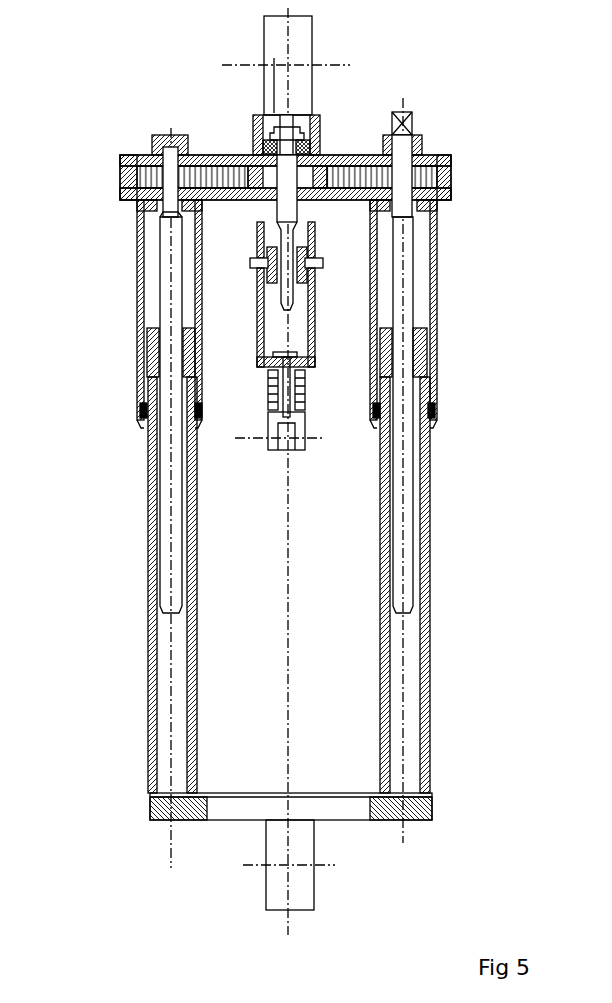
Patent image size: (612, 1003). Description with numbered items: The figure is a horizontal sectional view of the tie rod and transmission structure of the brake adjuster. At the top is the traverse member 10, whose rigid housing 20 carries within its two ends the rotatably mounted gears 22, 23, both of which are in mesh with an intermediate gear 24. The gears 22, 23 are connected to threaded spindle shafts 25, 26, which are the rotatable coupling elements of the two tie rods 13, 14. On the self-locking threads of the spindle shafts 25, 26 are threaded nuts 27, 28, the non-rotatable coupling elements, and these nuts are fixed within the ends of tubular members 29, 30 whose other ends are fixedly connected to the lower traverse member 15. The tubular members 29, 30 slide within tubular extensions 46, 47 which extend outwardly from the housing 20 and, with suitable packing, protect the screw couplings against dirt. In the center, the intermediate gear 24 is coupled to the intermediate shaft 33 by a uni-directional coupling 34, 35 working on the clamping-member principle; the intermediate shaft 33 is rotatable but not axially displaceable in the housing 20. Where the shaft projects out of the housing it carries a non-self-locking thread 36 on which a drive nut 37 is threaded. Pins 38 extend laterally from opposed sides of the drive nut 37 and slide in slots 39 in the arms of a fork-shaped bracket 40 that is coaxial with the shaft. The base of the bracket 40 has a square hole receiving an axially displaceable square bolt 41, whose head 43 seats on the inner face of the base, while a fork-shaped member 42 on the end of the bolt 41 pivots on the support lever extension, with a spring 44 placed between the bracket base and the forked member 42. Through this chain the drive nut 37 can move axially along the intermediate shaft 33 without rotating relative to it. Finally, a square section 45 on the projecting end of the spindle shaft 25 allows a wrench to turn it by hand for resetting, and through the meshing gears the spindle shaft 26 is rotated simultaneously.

The traverse member 10 is at (292, 474).
The tie rod 13 is at (349, 464).
The tie rod 14 is at (114, 470).
The traverse member 15 is at (232, 821).
The housing 20 is at (322, 158).
The gear 22 is at (440, 179).
The gear 23 is at (150, 175).
The intermediate gear 24 is at (226, 155).
The threaded spindle shaft 25 is at (438, 276).
The threaded spindle shaft 26 is at (167, 474).
The nut 27 is at (437, 360).
The nut 28 is at (137, 368).
The tubular member 29 is at (432, 711).
The tubular member 30 is at (148, 709).
The intermediate shaft 33 is at (272, 59).
The uni-directional coupling 34 is at (328, 153).
The uni-directional coupling 35 is at (303, 147).
The non-self-locking thread 36 is at (277, 223).
The drive nut 37 is at (318, 259).
The pins 38 is at (320, 270).
The slots 39 is at (267, 253).
The fork-shaped bracket 40 is at (258, 300).
The square bolt 41 is at (287, 384).
The fork-shaped member 42 is at (306, 425).
The head 43 is at (276, 355).
The spring 44 is at (308, 386).
The square section 45 is at (415, 118).
The tubular extension 46 is at (437, 394).
The tubular extension 47 is at (137, 251).